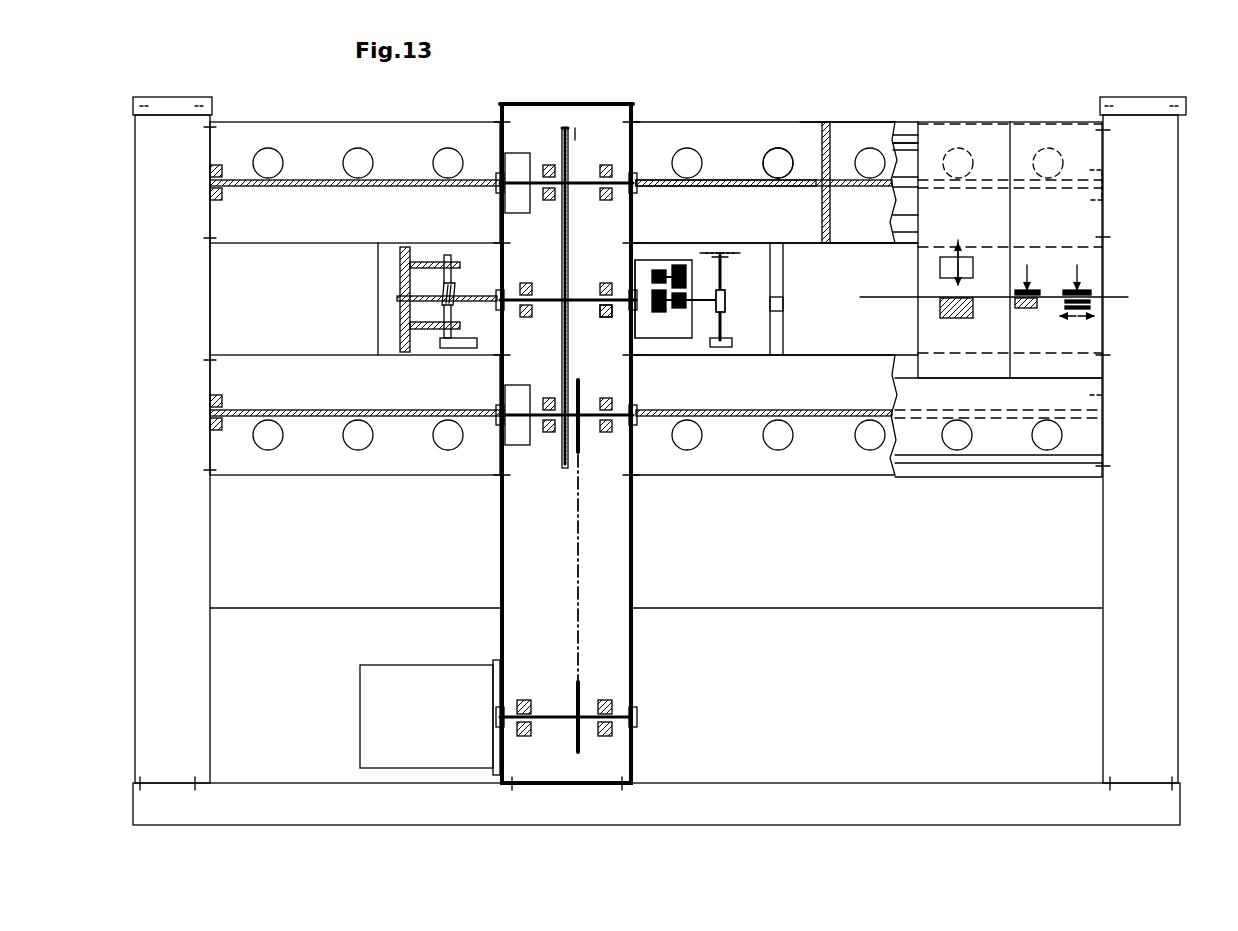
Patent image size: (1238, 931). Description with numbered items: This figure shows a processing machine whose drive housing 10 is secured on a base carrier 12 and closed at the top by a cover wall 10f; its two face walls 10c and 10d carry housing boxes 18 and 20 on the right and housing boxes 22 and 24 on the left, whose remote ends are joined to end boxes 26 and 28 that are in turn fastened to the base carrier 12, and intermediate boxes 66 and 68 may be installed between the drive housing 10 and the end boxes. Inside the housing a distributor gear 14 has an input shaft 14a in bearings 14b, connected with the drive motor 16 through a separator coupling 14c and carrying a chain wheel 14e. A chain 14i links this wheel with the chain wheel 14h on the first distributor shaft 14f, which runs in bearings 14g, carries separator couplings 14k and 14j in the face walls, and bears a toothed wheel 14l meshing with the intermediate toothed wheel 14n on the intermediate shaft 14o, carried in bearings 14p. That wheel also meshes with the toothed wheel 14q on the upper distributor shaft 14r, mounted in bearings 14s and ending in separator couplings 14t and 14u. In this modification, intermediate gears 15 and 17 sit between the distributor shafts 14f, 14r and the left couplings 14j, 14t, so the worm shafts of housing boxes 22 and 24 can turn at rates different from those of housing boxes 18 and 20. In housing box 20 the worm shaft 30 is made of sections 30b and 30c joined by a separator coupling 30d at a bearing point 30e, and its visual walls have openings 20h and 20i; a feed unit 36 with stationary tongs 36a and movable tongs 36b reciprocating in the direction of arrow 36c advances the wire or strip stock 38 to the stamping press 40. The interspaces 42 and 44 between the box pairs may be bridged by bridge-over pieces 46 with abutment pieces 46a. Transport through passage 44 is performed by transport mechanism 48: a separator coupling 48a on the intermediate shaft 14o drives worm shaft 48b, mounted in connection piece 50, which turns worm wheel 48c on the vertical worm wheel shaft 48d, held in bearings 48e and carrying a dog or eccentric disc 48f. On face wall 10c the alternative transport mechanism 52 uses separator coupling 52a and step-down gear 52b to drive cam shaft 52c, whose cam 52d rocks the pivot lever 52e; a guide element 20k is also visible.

The drive housing 10 is at (633, 586).
The face wall 10c is at (634, 544).
The face wall 10d is at (500, 527).
The cover wall 10f is at (592, 103).
The base carrier 12 is at (835, 806).
The distributor gear 14 is at (548, 534).
The input shaft 14a is at (555, 710).
The bearings 14b is at (523, 740).
The separator coupling 14c is at (506, 713).
The chain wheel 14e is at (580, 684).
The first distributor shaft 14f is at (535, 404).
The bearings 14g is at (606, 448).
The chain wheel 14h is at (586, 384).
The chain 14i is at (577, 590).
The separator coupling 14j is at (497, 414).
The separator coupling 14k is at (636, 430).
The toothed wheel 14l is at (549, 434).
The intermediate toothed wheel 14n is at (568, 256).
The intermediate shaft 14o is at (544, 287).
The bearings 14p is at (606, 318).
The toothed wheel 14q is at (564, 130).
The upper distributor shaft 14r is at (578, 128).
The bearings 14s is at (546, 166).
The separator coupling 14t is at (497, 178).
The separator coupling 14u is at (637, 170).
The intermediate gear 15 is at (518, 442).
The drive motor 16 is at (362, 703).
The intermediate gear 17 is at (505, 170).
The housing box 18 is at (845, 476).
The housing box 20 is at (886, 122).
The opening 20h is at (1046, 148).
The opening 20i is at (786, 152).
The guide step 20k is at (906, 148).
The housing box 22 is at (282, 477).
The housing box 24 is at (320, 122).
The end box 26 is at (1160, 554).
The end box 28 is at (135, 554).
The worm shaft 30 is at (742, 122).
The worm shaft section 30b is at (834, 186).
The worm shaft section 30c is at (714, 188).
The separator coupling 30d is at (820, 188).
The bearing point 30e is at (833, 122).
The feed unit 36 is at (1074, 236).
The stationary tongs 36a is at (1028, 284).
The movable tongs 36b is at (1087, 286).
The arrow 36c is at (1077, 318).
The wire or strip stock 38 is at (916, 314).
The stamping press 40 is at (894, 364).
The interspace 42 is at (775, 299).
The interspace 44 is at (243, 299).
The bridge-over piece 46 is at (788, 266).
The abutment piece 46a is at (782, 304).
The transport mechanism 48 is at (430, 256).
The separator coupling 48a is at (498, 288).
The worm shaft 48b is at (432, 294).
The worm wheel 48c is at (398, 299).
The worm wheel shaft 48d is at (428, 256).
The bearings 48e is at (416, 348).
The dog or eccentric disc 48f is at (462, 346).
The connection piece 50 is at (397, 330).
The alternative transport mechanism 52 is at (703, 338).
The separator coupling 52a is at (642, 262).
The toothed wheel step-down gear 52b is at (664, 332).
The cam shaft 52c is at (719, 296).
The cam 52d is at (727, 306).
The pivot lever 52e is at (726, 339).
The intermediate box 66 is at (285, 625).
The intermediate box 68 is at (933, 622).